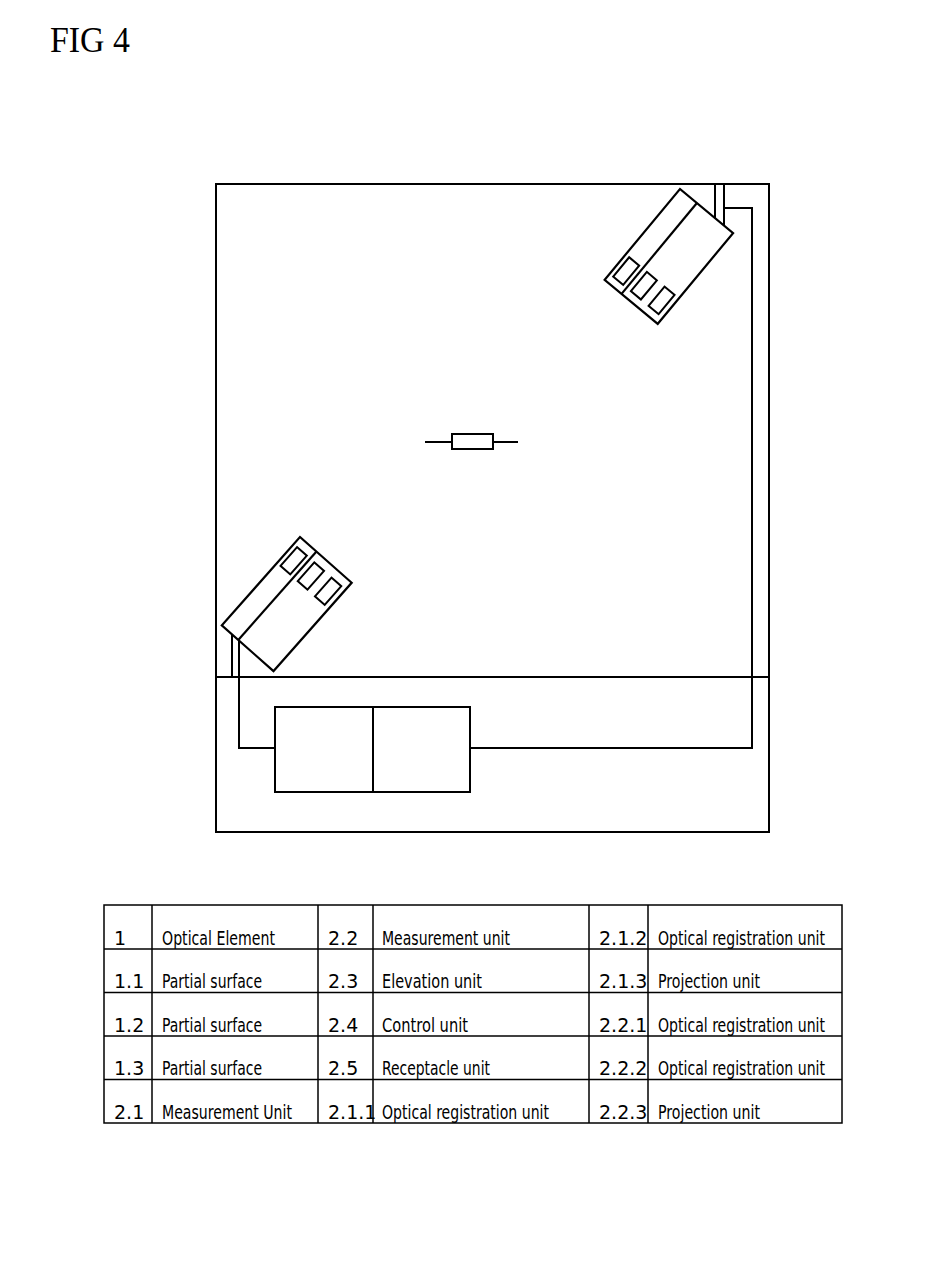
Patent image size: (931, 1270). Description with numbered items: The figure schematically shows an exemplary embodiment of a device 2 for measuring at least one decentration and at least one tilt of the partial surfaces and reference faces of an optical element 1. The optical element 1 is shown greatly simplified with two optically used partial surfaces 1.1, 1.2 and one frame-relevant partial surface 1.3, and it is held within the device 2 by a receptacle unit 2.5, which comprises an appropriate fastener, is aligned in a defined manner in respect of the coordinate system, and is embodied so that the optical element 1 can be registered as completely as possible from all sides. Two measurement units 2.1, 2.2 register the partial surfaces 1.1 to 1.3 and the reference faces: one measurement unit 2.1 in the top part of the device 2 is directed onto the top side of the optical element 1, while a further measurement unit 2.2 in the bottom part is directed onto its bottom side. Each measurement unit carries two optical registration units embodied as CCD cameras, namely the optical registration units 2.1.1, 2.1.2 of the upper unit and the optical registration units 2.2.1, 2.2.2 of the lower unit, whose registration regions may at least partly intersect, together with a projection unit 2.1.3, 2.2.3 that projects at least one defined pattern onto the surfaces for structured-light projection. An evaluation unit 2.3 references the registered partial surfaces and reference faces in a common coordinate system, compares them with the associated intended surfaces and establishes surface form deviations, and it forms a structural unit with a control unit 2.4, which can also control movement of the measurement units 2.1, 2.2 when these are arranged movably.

The optical element 1 is at (460, 446).
The partial surface 1.1 is at (470, 433).
The partial surface 1.2 is at (482, 450).
The partial surface 1.3 is at (494, 440).
The device 2 is at (282, 176).
The measurement unit 2.1 is at (619, 252).
The optical registration unit 2.1.1 is at (608, 278).
The optical registration unit 2.1.2 is at (663, 317).
The projection unit 2.1.3 is at (643, 303).
The measurement unit 2.2 is at (341, 607).
The optical registration unit 2.2.1 is at (350, 585).
The optical registration unit 2.2.2 is at (296, 555).
The projection unit 2.2.3 is at (316, 565).
The evaluation unit 2.3 is at (343, 761).
The control unit 2.4 is at (437, 761).
The receptacle unit 2.5 is at (432, 440).